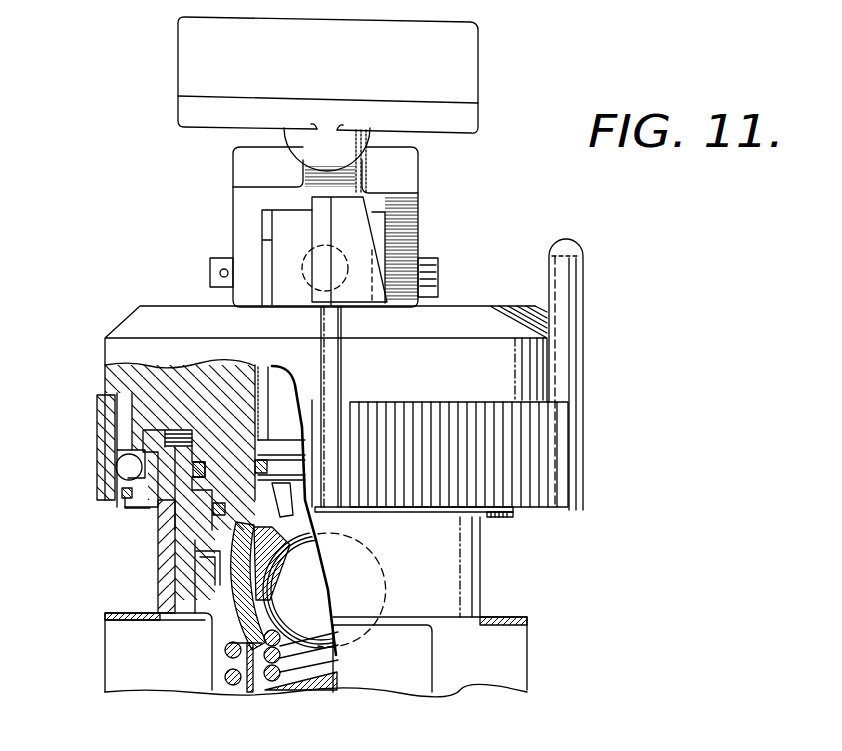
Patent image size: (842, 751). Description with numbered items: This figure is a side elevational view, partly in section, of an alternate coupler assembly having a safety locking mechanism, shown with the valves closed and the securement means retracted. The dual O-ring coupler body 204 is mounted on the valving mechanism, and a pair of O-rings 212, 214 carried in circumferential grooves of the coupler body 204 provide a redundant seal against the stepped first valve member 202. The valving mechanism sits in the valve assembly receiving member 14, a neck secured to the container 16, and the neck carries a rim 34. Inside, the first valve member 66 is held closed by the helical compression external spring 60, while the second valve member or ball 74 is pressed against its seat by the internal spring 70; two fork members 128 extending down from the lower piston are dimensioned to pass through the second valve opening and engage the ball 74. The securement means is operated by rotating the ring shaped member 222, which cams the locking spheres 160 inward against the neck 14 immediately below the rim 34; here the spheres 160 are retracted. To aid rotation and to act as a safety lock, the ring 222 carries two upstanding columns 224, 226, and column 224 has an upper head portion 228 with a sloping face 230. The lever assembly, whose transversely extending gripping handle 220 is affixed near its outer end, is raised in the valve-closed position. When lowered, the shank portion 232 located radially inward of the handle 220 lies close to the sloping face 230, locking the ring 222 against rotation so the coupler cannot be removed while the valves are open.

The gripping handle 220 is at (476, 55).
The shank portion 232 is at (300, 174).
The upper head portion 228 is at (356, 210).
The sloping face 230 is at (384, 262).
The upstanding column 226 is at (567, 312).
The upstanding column 224 is at (337, 368).
The ring shaped member 222 is at (538, 448).
The coupler body 204 is at (138, 383).
The rim 34 is at (133, 437).
The locking spheres 160 is at (117, 466).
The O-ring 214 is at (201, 460).
The O-ring 212 is at (208, 508).
The valve assembly receiving member 14 is at (158, 550).
The first valve member 202 is at (190, 540).
The fork members 128 is at (302, 527).
The first valve member 66 is at (250, 578).
The second valve member 74 is at (321, 590).
The container 16 is at (516, 618).
The helical compression external spring 60 is at (232, 684).
The internal spring 70 is at (323, 684).